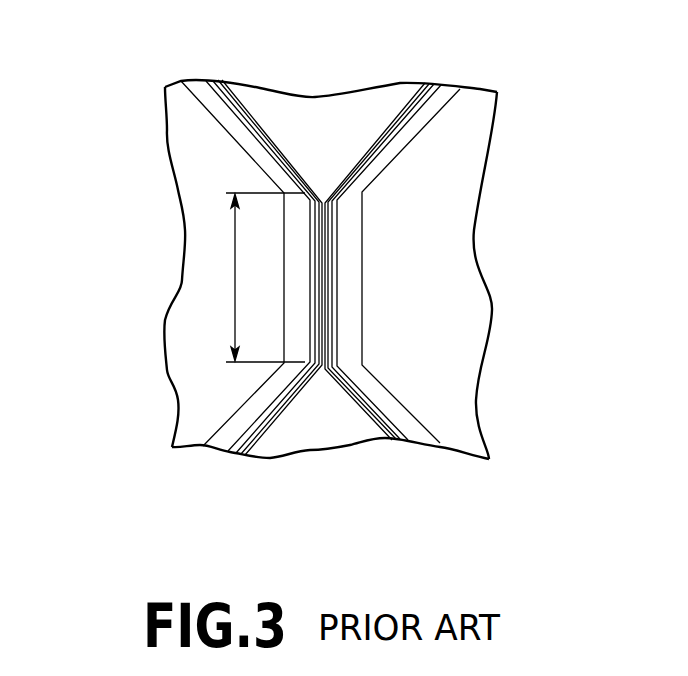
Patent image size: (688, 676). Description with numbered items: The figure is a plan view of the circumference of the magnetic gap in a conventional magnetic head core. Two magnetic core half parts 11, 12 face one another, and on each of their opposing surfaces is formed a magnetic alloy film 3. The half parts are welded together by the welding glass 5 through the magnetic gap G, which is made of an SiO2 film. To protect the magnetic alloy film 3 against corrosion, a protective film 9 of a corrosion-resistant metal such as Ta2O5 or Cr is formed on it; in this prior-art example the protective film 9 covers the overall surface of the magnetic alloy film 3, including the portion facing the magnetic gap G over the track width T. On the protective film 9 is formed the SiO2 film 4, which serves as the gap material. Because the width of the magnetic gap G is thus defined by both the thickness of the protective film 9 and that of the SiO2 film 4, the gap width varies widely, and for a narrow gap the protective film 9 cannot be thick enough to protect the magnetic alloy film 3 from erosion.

The magnetic alloy film 3 is at (192, 86).
The SiO2 film 4 is at (212, 80).
The welding glass 5 is at (321, 99).
The protective film 9 is at (204, 81).
The magnetic core half part 11 is at (158, 313).
The magnetic core half part 12 is at (503, 333).
The magnetic gap G is at (325, 262).
The track width T is at (256, 277).